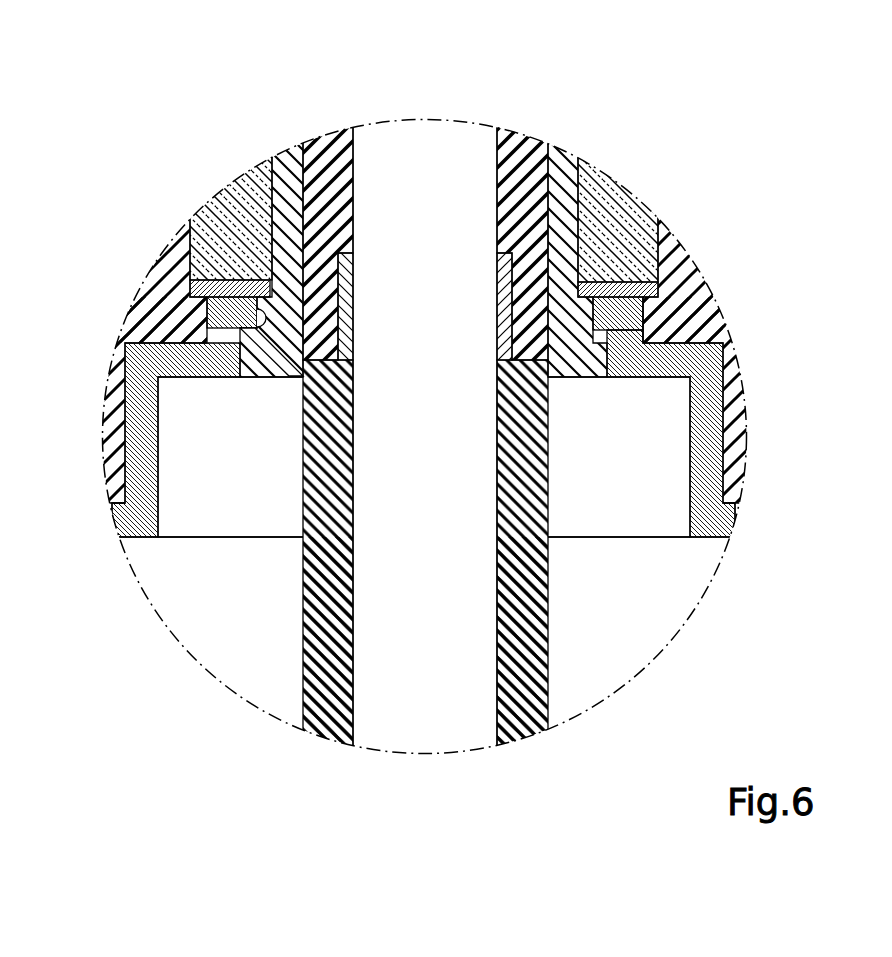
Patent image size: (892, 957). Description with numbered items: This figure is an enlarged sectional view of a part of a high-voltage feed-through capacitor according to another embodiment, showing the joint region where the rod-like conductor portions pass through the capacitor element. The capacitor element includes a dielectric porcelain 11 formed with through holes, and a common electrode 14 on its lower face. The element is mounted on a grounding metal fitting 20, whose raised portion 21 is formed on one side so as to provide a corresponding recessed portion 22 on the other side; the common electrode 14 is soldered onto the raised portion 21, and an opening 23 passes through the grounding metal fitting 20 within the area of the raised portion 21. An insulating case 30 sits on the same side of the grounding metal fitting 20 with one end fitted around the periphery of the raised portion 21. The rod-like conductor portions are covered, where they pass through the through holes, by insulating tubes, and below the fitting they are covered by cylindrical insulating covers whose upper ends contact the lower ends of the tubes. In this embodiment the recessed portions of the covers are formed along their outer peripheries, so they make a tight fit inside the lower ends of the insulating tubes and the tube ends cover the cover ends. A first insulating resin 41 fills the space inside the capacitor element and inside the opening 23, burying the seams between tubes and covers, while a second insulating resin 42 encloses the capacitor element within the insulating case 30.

The first insulating resin 41 is at (289, 167).
The second insulating resin 42 is at (172, 253).
The opening 23 is at (205, 338).
The insulating case 30 is at (112, 427).
The grounding metal fitting 20 is at (118, 521).
The recessed portion 22 is at (256, 523).
The raised portion 21 is at (658, 297).
The common electrode 14 is at (660, 284).
The dielectric porcelain 11 is at (632, 203).